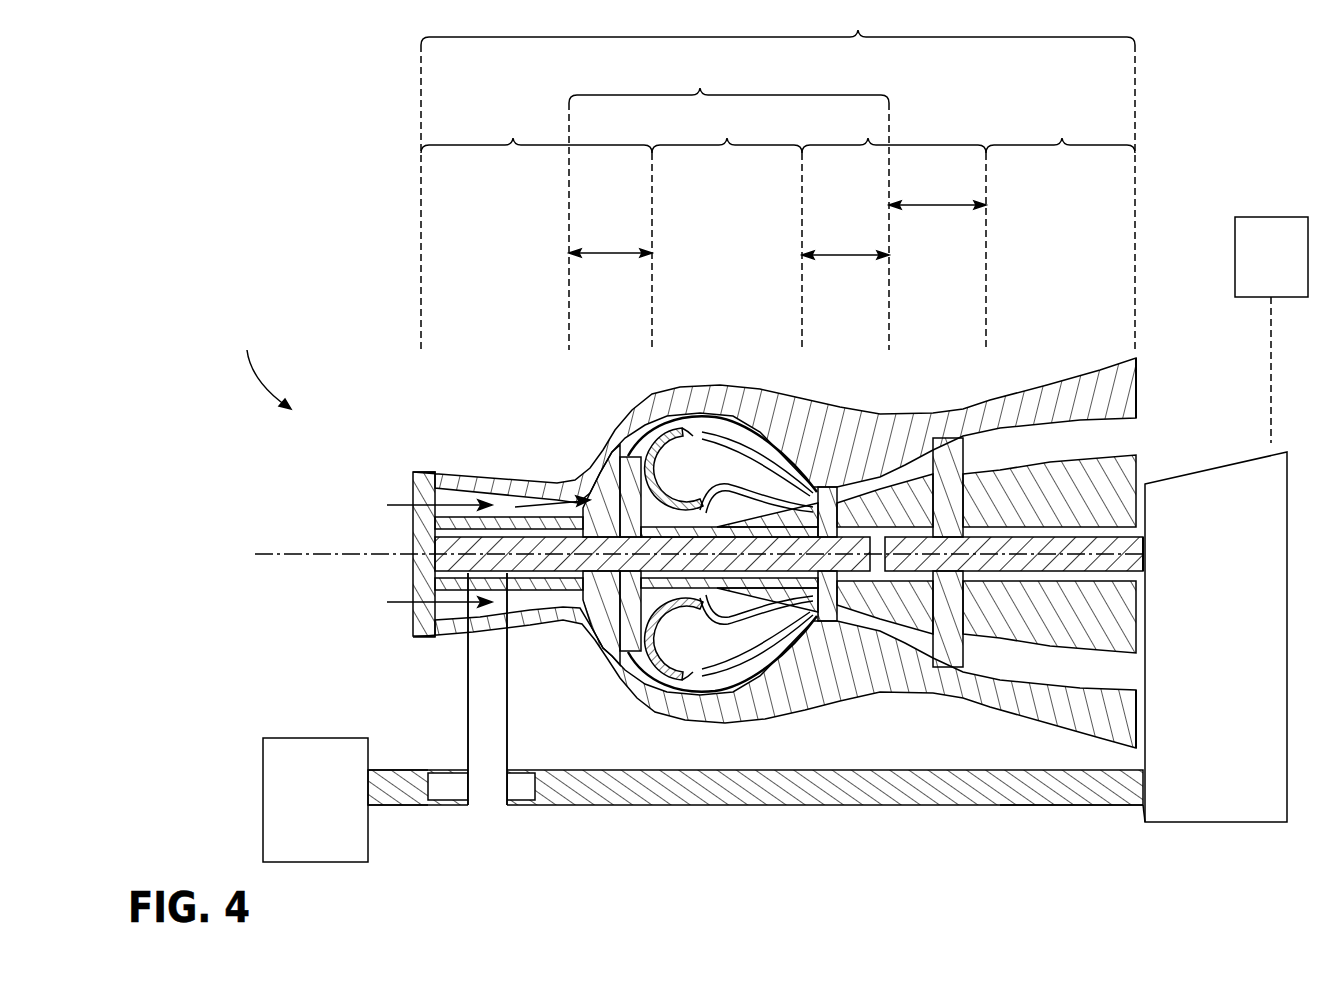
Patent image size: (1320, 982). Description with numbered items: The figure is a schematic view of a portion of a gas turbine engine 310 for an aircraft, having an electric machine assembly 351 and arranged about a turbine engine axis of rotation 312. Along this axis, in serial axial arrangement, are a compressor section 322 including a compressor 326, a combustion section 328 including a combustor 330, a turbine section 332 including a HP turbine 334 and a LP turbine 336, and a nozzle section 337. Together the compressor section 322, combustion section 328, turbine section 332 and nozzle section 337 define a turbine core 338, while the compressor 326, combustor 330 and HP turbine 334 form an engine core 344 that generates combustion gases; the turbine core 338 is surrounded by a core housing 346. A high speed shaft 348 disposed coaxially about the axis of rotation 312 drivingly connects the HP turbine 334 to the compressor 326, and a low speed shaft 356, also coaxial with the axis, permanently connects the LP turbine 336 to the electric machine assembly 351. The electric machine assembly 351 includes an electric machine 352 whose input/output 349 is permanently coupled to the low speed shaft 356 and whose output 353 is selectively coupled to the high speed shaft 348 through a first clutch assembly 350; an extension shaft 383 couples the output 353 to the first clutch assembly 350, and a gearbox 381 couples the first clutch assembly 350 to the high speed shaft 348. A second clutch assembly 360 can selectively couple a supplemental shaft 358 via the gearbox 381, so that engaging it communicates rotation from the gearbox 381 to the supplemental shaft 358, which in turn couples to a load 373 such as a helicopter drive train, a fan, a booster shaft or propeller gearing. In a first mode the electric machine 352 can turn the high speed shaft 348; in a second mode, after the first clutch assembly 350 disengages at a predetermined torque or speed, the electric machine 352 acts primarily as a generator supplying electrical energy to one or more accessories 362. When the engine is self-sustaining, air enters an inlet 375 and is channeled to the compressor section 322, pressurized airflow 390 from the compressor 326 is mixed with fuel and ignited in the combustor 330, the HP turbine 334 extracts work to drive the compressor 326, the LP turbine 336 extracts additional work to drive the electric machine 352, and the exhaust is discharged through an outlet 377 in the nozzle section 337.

The turbine engine 310 is at (257, 366).
The turbine engine axis of rotation 312 is at (318, 552).
The compressor section 322 is at (536, 231).
The compressor 326 is at (611, 250).
The combustion section 328 is at (727, 231).
The combustor 330 is at (745, 665).
The turbine section 332 is at (894, 132).
The HP turbine 334 is at (845, 252).
The LP turbine 336 is at (937, 202).
The nozzle section 337 is at (1060, 231).
The turbine core 338 is at (778, 175).
The engine core 344 is at (729, 204).
The core housing 346 is at (730, 386).
The high speed shaft 348 is at (540, 516).
The input/output 349 is at (1147, 553).
The first clutch assembly 350 is at (527, 802).
The electric machine assembly 351 is at (1118, 820).
The electric machine 352 is at (1192, 657).
The output 353 is at (1147, 787).
The low speed shaft 356 is at (1073, 537).
The supplemental shaft 358 is at (379, 806).
The second clutch assembly 360 is at (450, 772).
The accessories 362 is at (1253, 270).
The load 373 is at (298, 817).
The inlet 375 is at (413, 478).
The outlet 377 is at (1140, 413).
The gearbox 381 is at (467, 662).
The extension shaft 383 is at (900, 806).
The pressurized airflow 390 is at (458, 506).